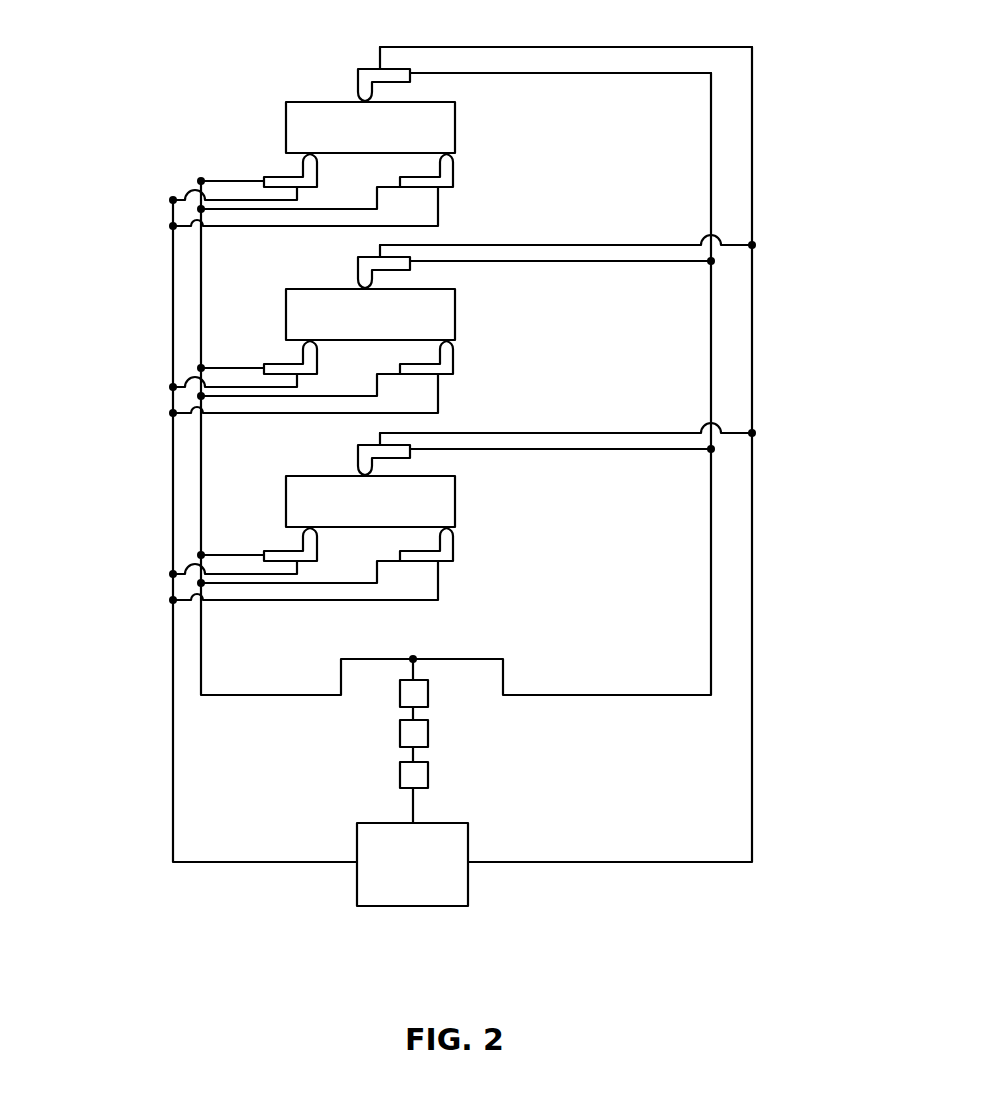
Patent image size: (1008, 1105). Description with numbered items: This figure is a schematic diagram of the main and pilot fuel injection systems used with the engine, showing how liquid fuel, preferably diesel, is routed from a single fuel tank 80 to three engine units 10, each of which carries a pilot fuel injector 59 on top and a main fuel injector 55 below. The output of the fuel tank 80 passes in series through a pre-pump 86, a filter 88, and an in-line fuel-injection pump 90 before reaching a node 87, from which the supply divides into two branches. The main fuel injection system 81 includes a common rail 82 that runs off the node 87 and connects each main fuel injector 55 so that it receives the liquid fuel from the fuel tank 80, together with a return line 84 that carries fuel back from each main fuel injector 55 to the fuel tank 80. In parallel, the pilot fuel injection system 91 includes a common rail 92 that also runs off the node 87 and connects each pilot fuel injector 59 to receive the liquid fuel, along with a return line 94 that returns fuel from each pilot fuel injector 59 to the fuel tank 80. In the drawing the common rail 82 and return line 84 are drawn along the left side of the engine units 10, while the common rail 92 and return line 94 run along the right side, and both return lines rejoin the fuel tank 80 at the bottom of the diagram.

The fuel injection module 10 is at (423, 101).
The main fuel injector 55 is at (440, 167).
The pilot fuel injector 59 is at (358, 80).
The fuel tank 80 is at (437, 906).
The main fuel injection system 81 is at (124, 500).
The common rail 82 is at (202, 472).
The return line 84 is at (173, 407).
The pre-pump 86 is at (428, 775).
The node 87 is at (413, 659).
The filter 88 is at (428, 733).
The in-line fuel-injection pump 90 is at (428, 693).
The pilot fuel injection system 91 is at (800, 467).
The common rail 92 is at (710, 518).
The return line 94 is at (752, 577).